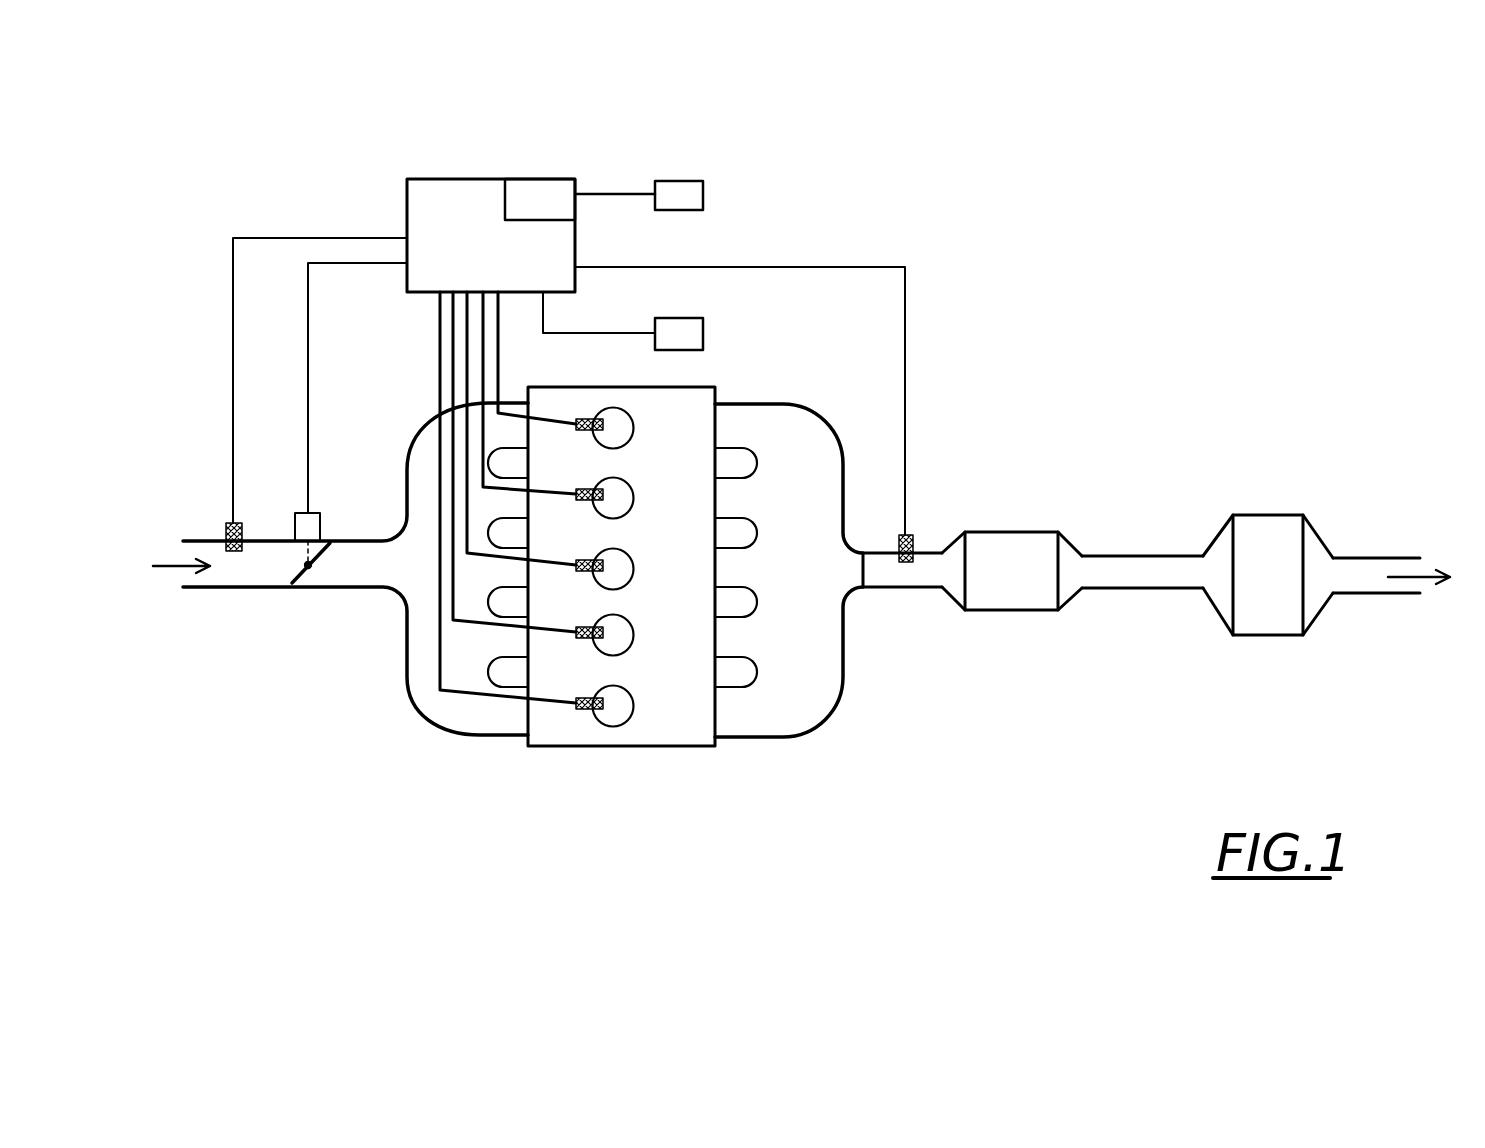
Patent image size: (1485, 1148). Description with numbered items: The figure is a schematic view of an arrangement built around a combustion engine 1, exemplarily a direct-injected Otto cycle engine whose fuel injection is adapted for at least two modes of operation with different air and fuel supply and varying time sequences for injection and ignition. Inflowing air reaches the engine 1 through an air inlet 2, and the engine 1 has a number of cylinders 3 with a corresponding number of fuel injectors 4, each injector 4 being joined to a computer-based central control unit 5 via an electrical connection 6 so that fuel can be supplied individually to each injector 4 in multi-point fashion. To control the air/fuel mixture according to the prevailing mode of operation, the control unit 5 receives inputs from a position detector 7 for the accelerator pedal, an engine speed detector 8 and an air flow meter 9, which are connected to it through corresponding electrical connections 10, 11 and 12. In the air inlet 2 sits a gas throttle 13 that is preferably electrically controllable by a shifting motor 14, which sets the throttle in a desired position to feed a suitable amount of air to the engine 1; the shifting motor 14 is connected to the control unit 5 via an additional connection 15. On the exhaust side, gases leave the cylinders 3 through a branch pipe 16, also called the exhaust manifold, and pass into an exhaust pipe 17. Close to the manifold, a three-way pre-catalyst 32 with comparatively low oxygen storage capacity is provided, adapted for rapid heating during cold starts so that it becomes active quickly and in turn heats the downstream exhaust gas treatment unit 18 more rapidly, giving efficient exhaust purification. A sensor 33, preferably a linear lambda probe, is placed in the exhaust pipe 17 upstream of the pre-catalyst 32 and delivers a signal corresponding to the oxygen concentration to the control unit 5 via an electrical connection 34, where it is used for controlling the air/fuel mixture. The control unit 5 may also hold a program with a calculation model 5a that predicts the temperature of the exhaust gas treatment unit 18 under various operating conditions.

The combustion engine 1 is at (670, 738).
The air inlet 2 is at (342, 582).
The cylinders 3 is at (610, 723).
The fuel injectors 4 is at (580, 710).
The central control unit 5 is at (435, 190).
The calculation model 5a is at (542, 192).
The electrical connection 6 is at (475, 697).
The position detector 7 is at (678, 188).
The engine speed detector 8 is at (678, 320).
The air flow meter 9 is at (226, 527).
The electrical connection 10 is at (610, 194).
The electrical connection 11 is at (610, 333).
The electrical connection 12 is at (233, 371).
The gas throttle 13 is at (300, 580).
The shifting motor 14 is at (297, 513).
The connection 15 is at (308, 422).
The branch pipe 16 is at (803, 722).
The exhaust pipe 17 is at (885, 580).
The exhaust gas treatment unit 18 is at (1222, 610).
The pre-catalyst 32 is at (1020, 603).
The sensor 33 is at (913, 537).
The electrical connection 34 is at (905, 390).